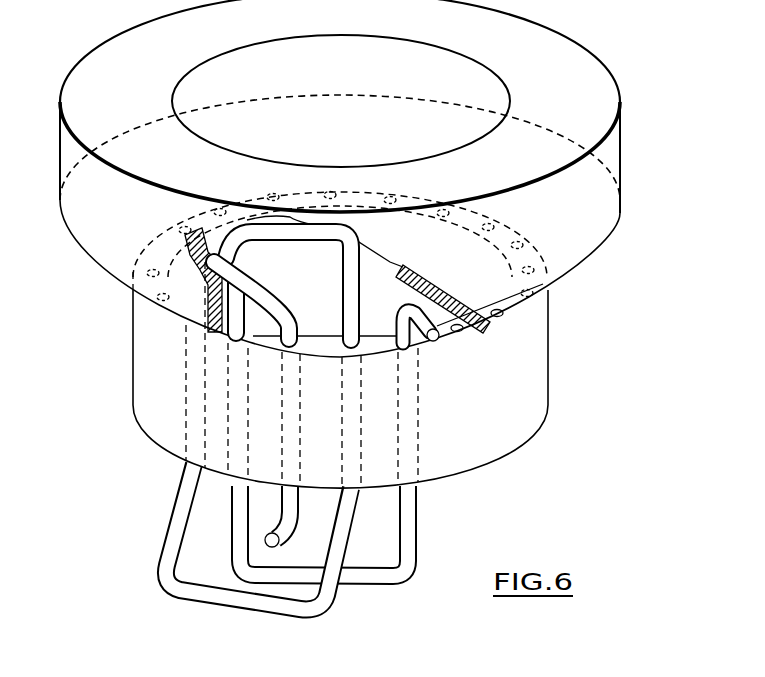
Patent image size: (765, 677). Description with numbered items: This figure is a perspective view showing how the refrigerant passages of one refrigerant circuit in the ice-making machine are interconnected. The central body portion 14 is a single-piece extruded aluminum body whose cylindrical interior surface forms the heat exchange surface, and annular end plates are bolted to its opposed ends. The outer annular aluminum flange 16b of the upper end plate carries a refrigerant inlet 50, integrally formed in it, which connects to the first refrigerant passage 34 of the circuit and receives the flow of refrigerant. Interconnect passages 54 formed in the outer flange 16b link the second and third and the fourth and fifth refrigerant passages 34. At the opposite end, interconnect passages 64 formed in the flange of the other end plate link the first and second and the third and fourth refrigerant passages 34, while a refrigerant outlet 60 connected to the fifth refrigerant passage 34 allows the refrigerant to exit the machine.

The outer annular aluminum flange 16b is at (577, 63).
The central body portion 14 is at (488, 455).
The refrigerant passage 34 is at (518, 232).
The interconnect passage 54 is at (213, 252).
The refrigerant inlet 50 is at (440, 347).
The refrigerant outlet 60 is at (262, 552).
The interconnect passage 64 is at (197, 590).